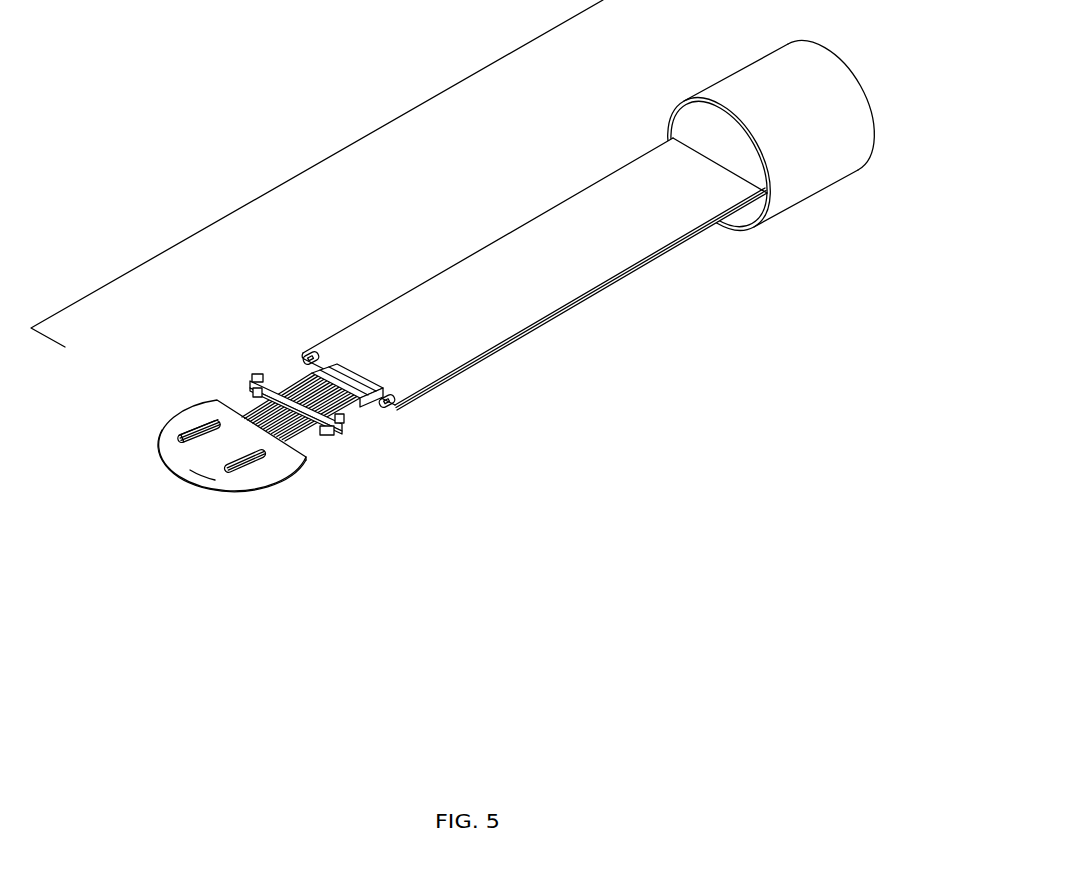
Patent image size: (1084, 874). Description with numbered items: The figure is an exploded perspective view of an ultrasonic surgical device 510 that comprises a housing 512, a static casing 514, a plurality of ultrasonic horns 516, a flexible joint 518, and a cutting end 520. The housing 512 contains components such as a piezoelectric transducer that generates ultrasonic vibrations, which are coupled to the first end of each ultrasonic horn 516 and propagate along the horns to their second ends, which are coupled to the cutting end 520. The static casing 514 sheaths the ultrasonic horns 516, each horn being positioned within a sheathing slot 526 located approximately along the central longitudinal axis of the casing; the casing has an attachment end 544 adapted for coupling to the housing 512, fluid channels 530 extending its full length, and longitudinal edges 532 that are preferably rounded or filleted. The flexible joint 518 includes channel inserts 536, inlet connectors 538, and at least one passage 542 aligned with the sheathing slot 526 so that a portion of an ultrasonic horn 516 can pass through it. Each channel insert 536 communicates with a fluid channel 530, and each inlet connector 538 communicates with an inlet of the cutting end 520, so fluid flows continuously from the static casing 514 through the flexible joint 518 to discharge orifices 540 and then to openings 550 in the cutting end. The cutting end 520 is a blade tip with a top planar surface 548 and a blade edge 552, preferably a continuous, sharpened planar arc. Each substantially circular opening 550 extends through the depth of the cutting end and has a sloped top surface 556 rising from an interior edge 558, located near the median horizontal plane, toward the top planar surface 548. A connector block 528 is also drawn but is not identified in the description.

The ultrasonic surgical device 510 is at (358, 91).
The housing 512 is at (760, 141).
The static casing 514 is at (511, 292).
The ultrasonic horns 516 is at (303, 428).
The flexible joint 518 is at (305, 400).
The cutting end 520 is at (197, 453).
The sheathing slot 526 is at (264, 328).
The connector block 528 is at (295, 362).
The fluid channels 530 is at (415, 419).
The longitudinal edges 532 is at (581, 299).
The channel inserts 536 is at (281, 385).
The inlet connectors 538 is at (256, 398).
The discharge orifices 540 is at (163, 403).
The passage 542 is at (271, 407).
The attachment end 544 is at (744, 200).
The top planar surface 548 is at (187, 502).
The openings 550 is at (164, 432).
The blade edge 552 is at (207, 461).
The sloped top surface 556 is at (153, 418).
The interior edge 558 is at (259, 482).